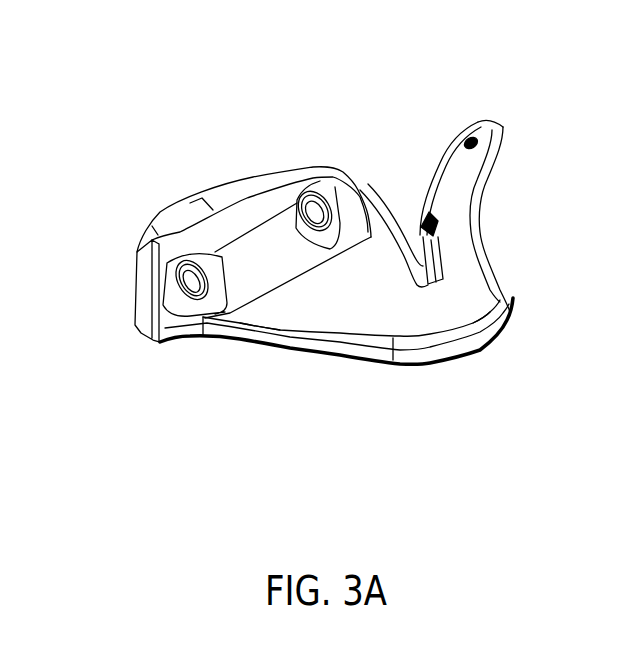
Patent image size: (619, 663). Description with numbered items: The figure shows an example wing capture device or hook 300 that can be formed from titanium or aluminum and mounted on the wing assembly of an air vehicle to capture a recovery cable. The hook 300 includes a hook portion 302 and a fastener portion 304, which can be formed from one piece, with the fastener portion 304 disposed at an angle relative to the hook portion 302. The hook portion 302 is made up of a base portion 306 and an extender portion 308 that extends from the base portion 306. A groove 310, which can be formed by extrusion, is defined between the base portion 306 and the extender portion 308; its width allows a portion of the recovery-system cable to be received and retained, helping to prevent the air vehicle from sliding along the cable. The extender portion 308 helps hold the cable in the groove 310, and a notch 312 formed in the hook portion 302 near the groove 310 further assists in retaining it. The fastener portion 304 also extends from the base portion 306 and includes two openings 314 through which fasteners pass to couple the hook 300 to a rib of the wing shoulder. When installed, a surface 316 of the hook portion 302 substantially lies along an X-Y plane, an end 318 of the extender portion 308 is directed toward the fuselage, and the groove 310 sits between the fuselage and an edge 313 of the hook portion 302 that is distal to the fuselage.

The hook 300 is at (122, 62).
The hook portion 302 is at (498, 356).
The fastener portion 304 is at (217, 187).
The base portion 306 is at (365, 377).
The extender portion 308 is at (420, 150).
The groove 310 is at (416, 266).
The notch 312 is at (438, 233).
The edge 313 is at (400, 363).
The openings 314 is at (315, 196).
The surface 316 is at (327, 310).
The end 318 is at (480, 123).